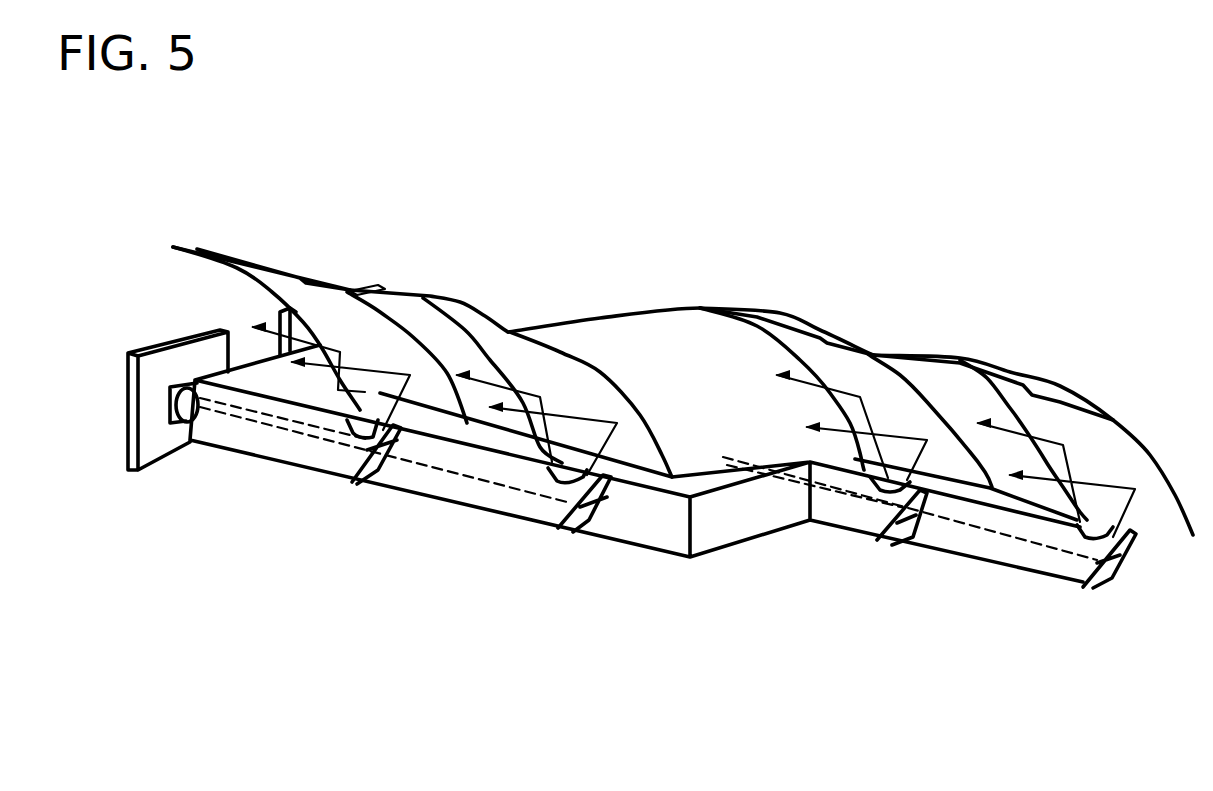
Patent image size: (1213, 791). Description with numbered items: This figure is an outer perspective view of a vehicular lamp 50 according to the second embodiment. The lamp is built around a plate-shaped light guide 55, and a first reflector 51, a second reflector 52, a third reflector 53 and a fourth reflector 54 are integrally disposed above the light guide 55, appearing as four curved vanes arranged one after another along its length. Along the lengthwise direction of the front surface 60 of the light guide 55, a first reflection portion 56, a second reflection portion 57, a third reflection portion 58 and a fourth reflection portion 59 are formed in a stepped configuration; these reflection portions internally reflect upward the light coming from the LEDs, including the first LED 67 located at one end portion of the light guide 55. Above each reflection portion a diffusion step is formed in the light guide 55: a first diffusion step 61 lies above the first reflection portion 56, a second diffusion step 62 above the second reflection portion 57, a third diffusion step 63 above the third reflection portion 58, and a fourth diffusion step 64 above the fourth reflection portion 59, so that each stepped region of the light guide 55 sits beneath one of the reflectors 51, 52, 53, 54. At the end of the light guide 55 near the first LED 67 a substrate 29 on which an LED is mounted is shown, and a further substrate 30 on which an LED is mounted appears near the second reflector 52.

The substrate 29 is at (158, 372).
The substrate 30 is at (372, 286).
The vehicular lamp 50 is at (917, 198).
The first reflector 51 is at (211, 244).
The second reflector 52 is at (450, 298).
The third reflector 53 is at (745, 308).
The fourth reflector 54 is at (986, 358).
The light guide 55 is at (263, 353).
The first reflection portion 56 is at (388, 470).
The second reflection portion 57 is at (588, 527).
The third reflection portion 58 is at (908, 527).
The fourth reflection portion 59 is at (1110, 570).
The front surface 60 is at (272, 443).
The first diffusion step 61 is at (362, 425).
The second diffusion step 62 is at (565, 478).
The third diffusion step 63 is at (888, 485).
The fourth diffusion step 64 is at (1093, 530).
The first LED 67 is at (185, 420).